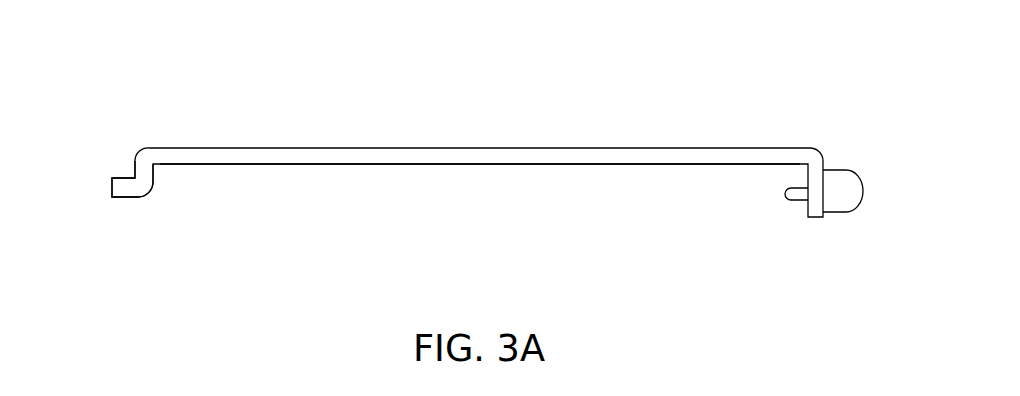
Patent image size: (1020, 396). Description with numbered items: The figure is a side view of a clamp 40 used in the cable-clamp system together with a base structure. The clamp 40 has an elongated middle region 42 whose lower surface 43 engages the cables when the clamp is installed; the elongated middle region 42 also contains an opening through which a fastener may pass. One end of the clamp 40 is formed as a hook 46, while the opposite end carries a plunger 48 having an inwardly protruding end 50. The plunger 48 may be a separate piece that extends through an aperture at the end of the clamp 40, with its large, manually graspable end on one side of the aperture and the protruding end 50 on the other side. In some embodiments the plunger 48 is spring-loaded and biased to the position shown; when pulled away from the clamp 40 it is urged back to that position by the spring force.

The clamp 40 is at (345, 103).
The elongated middle region 42 is at (471, 148).
The lower surface 43 is at (412, 164).
The hook 46 is at (125, 178).
The plunger 48 is at (840, 170).
The inwardly protruding end 50 is at (793, 202).